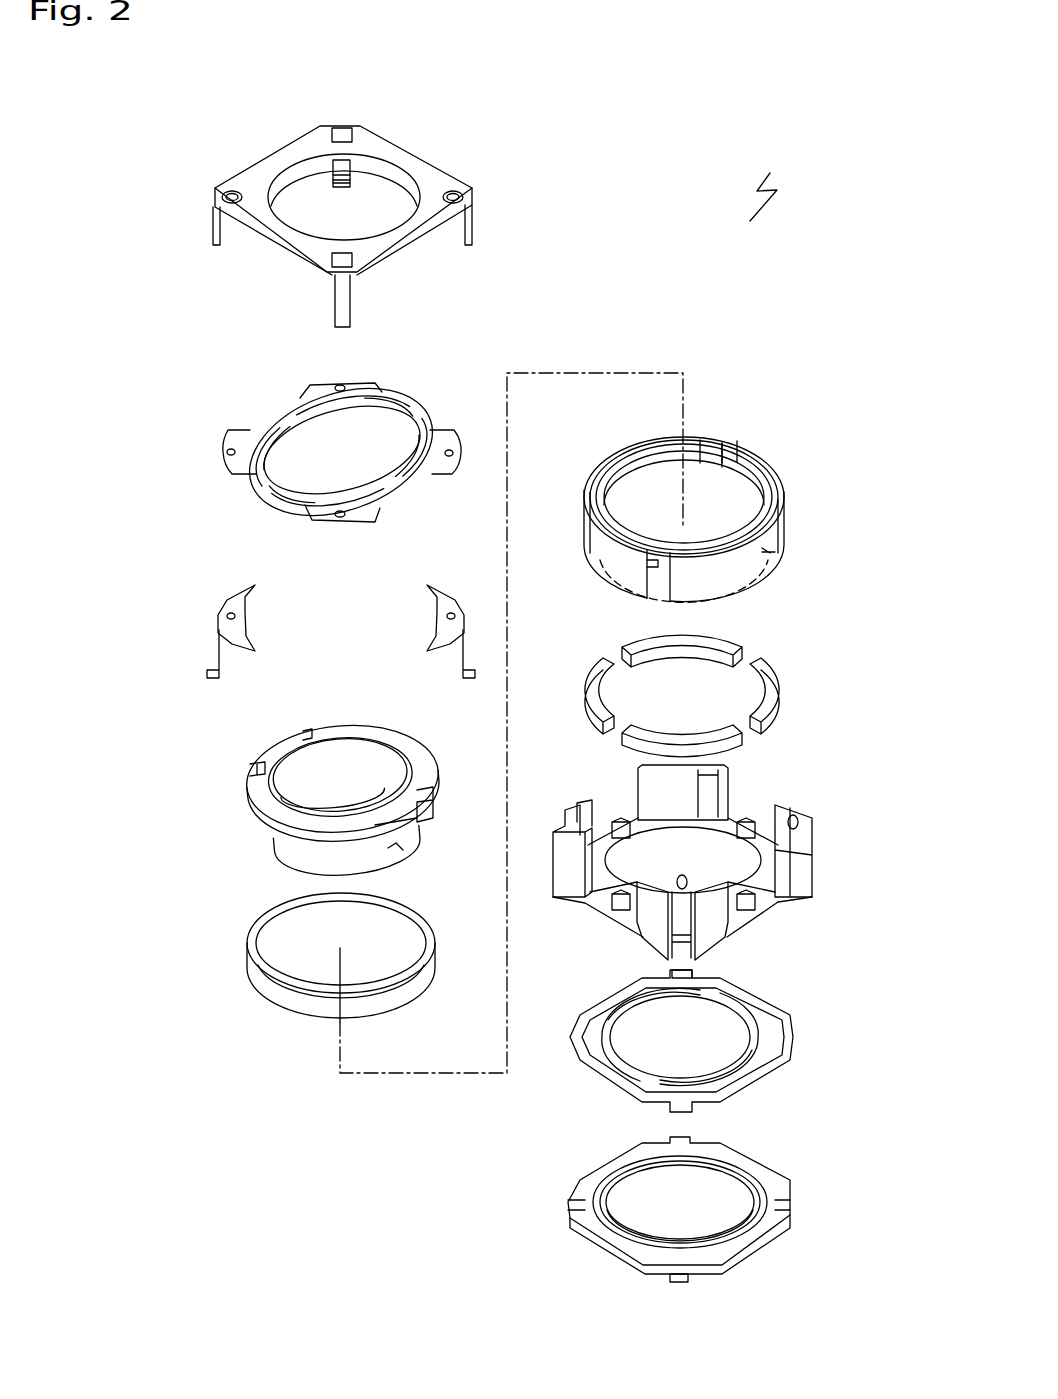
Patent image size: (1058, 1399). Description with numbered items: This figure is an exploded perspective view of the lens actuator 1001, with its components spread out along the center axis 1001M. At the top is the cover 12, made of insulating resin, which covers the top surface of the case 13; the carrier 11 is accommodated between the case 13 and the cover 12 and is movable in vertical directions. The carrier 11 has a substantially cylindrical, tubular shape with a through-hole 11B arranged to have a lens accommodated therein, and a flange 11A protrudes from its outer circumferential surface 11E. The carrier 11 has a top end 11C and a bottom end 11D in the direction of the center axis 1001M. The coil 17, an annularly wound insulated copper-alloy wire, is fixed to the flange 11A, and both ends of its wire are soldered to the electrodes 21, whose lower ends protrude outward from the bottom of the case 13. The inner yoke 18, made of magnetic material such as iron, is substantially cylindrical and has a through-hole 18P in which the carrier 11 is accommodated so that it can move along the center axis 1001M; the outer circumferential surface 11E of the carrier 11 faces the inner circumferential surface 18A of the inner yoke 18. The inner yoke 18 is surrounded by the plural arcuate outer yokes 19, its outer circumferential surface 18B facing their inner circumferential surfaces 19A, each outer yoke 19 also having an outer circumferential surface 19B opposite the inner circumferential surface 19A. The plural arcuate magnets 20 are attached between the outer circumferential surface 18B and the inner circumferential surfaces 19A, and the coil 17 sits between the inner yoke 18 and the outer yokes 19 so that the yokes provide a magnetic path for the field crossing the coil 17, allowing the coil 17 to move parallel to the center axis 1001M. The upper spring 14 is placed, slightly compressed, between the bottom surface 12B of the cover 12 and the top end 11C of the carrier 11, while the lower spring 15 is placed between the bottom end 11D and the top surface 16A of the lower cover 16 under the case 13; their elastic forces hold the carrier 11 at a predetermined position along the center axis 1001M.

The lens actuator 1001 is at (784, 183).
The center axis 1001M is at (683, 398).
The cover 12 is at (296, 226).
The bottom surface of cover 12B is at (262, 240).
The upper spring 14 is at (232, 437).
The electrodes 21 is at (428, 594).
The carrier 11 is at (307, 785).
The flange 11A is at (253, 783).
The through-hole 11B is at (345, 765).
The top end of carrier 11C is at (420, 775).
The bottom end of carrier 11D is at (288, 768).
The outer circumferential surface of carrier 11E is at (302, 843).
The coil 17 is at (247, 957).
The inner yoke 18 is at (716, 454).
The inner circumferential surface of inner yoke 18A is at (643, 487).
The outer circumferential surface of inner yoke 18B is at (658, 565).
The through-hole of inner yoke 18P is at (700, 513).
The outer yokes 19 is at (733, 477).
The inner circumferential surfaces of outer yokes 19A is at (745, 467).
The outer circumferential surface of outer yoke 19B is at (762, 552).
The magnets 20 is at (777, 670).
The case 13 is at (812, 866).
The lower spring 15 is at (793, 1032).
The lower cover 16 is at (727, 1193).
The top surface of lower cover 16A is at (760, 1185).